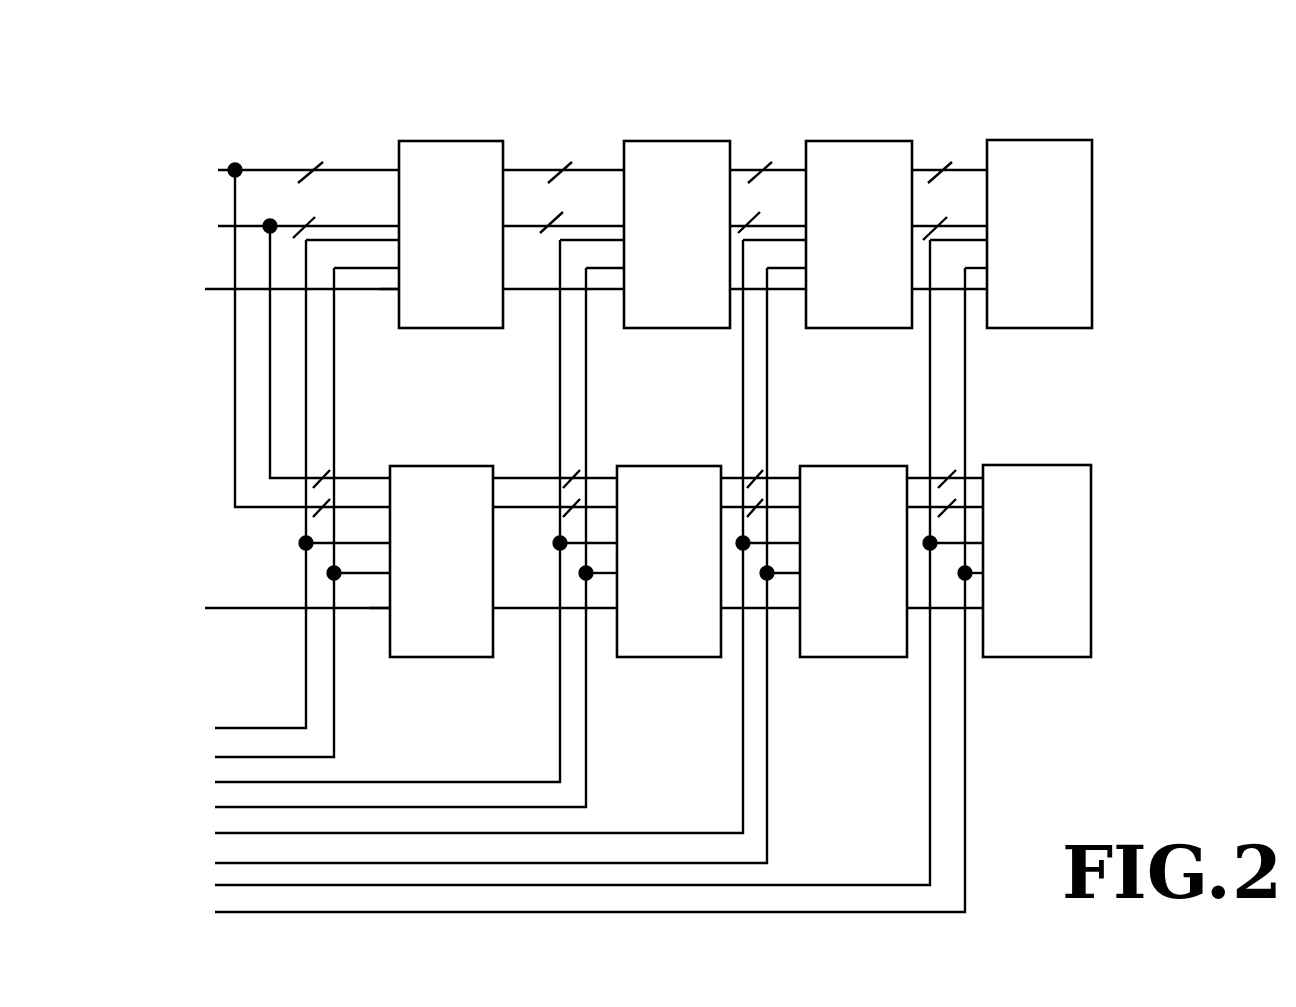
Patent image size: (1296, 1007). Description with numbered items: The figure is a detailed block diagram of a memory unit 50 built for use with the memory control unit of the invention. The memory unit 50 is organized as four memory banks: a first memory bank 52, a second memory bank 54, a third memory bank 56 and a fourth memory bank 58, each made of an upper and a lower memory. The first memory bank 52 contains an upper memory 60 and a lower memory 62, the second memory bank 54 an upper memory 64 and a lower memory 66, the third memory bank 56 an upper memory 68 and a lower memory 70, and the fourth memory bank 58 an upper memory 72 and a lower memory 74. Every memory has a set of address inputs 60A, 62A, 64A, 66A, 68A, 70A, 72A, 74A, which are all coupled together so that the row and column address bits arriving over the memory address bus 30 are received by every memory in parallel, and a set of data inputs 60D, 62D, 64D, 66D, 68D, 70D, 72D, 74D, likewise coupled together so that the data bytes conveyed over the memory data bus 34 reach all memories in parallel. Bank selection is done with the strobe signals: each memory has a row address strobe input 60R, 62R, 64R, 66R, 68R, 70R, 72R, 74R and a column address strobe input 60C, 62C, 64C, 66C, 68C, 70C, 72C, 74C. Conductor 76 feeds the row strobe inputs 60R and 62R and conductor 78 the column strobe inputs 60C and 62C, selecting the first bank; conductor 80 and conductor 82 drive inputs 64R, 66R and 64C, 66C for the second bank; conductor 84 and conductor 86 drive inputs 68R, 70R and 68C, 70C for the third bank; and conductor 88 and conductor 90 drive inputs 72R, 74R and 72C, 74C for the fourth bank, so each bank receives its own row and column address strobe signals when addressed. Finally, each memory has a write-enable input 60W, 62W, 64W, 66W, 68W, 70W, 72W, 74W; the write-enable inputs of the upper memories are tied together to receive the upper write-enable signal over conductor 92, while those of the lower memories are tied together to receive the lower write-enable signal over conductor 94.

The memory address bus 30 is at (256, 170).
The memory data bus 34 is at (250, 226).
The memory unit 50 is at (1201, 297).
The first memory bank 52 is at (510, 128).
The second memory bank 54 is at (729, 128).
The third memory bank 56 is at (917, 126).
The fourth memory bank 58 is at (1096, 126).
The upper memory 60 is at (466, 201).
The lower memory 62 is at (457, 522).
The upper memory 64 is at (692, 201).
The lower memory 66 is at (684, 522).
The upper memory 68 is at (874, 201).
The lower memory 70 is at (868, 522).
The upper memory 72 is at (1054, 201).
The lower memory 74 is at (1052, 522).
The conductor 76 is at (232, 729).
The conductor 78 is at (232, 758).
The conductor 80 is at (232, 783).
The conductor 82 is at (232, 808).
The conductor 84 is at (232, 834).
The conductor 86 is at (232, 864).
The conductor 88 is at (232, 886).
The conductor 90 is at (232, 913).
The bus conductor 92 is at (234, 292).
The conductor 94 is at (266, 610).
The address inputs 60A is at (399, 170).
The data inputs 60D is at (399, 226).
The row address strobe input 60R is at (377, 242).
The column address strobe input 60C is at (391, 269).
The write-enable input 60W is at (418, 291).
The address inputs 62A is at (388, 478).
The data inputs 62D is at (388, 507).
The row address strobe input 62R is at (373, 544).
The column address strobe input 62C is at (387, 573).
The write-enable input 62W is at (408, 607).
The address inputs 64A is at (624, 170).
The data inputs 64D is at (624, 226).
The row address strobe input 64R is at (617, 242).
The column address strobe input 64C is at (630, 269).
The write-enable input 64W is at (592, 291).
The address inputs 66A is at (616, 478).
The data inputs 66D is at (615, 507).
The row address strobe input 66R is at (613, 544).
The column address strobe input 66C is at (626, 573).
The write-enable input 66W is at (583, 607).
The address inputs 68A is at (806, 170).
The data inputs 68D is at (806, 226).
The row address strobe input 68R is at (799, 242).
The column address strobe input 68C is at (811, 269).
The write-enable input 68W is at (796, 291).
The address inputs 70A is at (799, 478).
The data inputs 70D is at (798, 507).
The row address strobe input 70R is at (796, 544).
The column address strobe input 70C is at (808, 573).
The write-enable input 70W is at (789, 607).
The address inputs 72A is at (987, 170).
The data inputs 72D is at (987, 226).
The row address strobe input 72R is at (983, 242).
The column address strobe input 72C is at (1001, 269).
The write-enable input 72W is at (978, 291).
The address inputs 74A is at (982, 478).
The data inputs 74D is at (982, 507).
The row address strobe input 74R is at (981, 544).
The column address strobe input 74C is at (999, 573).
The write-enable input 74W is at (973, 607).